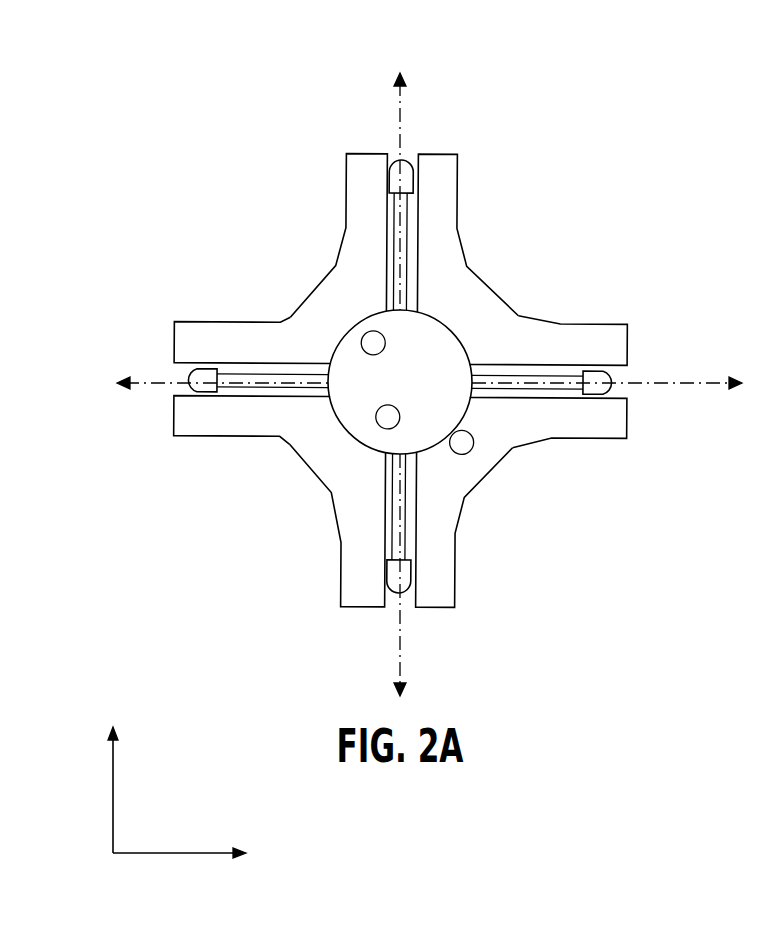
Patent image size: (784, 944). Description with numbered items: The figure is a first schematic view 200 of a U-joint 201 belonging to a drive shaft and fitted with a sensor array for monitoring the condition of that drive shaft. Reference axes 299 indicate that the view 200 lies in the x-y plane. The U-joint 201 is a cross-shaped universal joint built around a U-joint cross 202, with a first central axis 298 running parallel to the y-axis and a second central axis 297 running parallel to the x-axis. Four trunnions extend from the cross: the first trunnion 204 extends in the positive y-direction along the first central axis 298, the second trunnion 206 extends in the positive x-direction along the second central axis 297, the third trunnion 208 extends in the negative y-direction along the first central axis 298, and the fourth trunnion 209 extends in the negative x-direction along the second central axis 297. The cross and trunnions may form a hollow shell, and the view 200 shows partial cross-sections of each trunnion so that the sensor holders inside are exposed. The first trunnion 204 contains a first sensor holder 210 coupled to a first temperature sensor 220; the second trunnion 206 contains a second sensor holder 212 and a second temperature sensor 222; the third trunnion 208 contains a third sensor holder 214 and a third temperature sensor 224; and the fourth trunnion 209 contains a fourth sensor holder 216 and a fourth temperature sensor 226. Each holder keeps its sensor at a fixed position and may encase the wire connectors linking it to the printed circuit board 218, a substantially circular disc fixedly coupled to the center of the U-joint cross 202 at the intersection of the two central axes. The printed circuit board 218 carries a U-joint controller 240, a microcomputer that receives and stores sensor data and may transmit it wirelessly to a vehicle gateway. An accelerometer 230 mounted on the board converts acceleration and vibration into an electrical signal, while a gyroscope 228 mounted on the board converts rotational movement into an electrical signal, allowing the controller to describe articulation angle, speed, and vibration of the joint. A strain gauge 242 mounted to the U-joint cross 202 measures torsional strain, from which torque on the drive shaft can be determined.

The first schematic view 200 is at (713, 80).
The U-joint 201 is at (640, 197).
The U-joint cross 202 is at (474, 270).
The first trunnion 204 is at (460, 172).
The second trunnion 206 is at (582, 324).
The third trunnion 208 is at (456, 559).
The fourth trunnion 209 is at (187, 322).
The first sensor holder 210 is at (406, 232).
The second sensor holder 212 is at (530, 385).
The third sensor holder 214 is at (406, 516).
The fourth sensor holder 216 is at (233, 378).
The printed circuit board 218 is at (415, 393).
The first temperature sensor 220 is at (403, 160).
The second temperature sensor 222 is at (617, 378).
The third temperature sensor 224 is at (403, 593).
The fourth temperature sensor 226 is at (178, 390).
The gyroscope 228 is at (378, 421).
The accelerometer 230 is at (366, 333).
The U-joint controller 240 is at (441, 325).
The strain gauge 242 is at (472, 447).
The second central axis 297 is at (706, 383).
The first central axis 298 is at (404, 118).
The reference axes 299 is at (198, 763).